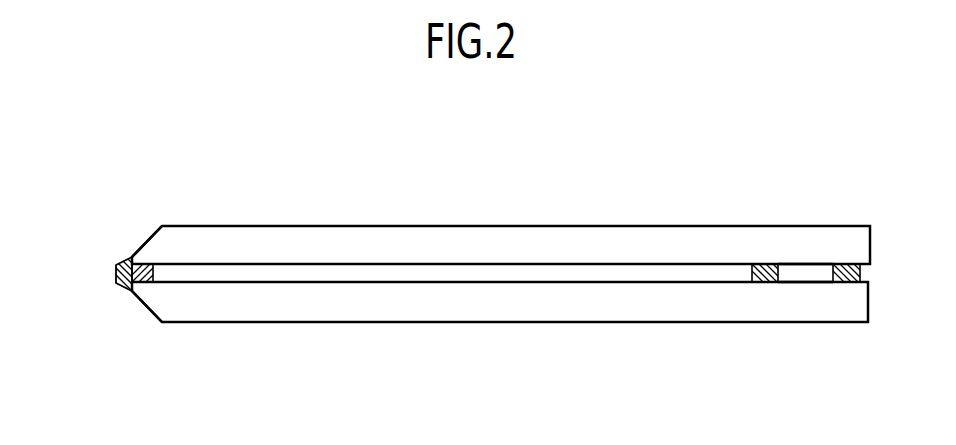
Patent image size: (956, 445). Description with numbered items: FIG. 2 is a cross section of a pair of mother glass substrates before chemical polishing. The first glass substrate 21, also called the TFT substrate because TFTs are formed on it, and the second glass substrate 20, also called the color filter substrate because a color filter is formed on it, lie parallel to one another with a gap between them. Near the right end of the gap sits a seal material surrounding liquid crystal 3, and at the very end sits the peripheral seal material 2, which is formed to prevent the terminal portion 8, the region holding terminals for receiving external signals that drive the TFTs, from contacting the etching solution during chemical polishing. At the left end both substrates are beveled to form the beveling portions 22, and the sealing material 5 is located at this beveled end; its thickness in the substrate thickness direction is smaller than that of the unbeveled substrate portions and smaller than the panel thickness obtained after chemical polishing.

The second glass substrate 20 is at (402, 234).
The first glass substrate 21 is at (404, 310).
The beveling portions 22 is at (143, 241).
The sealing material 5 is at (115, 273).
The terminal portion 8 is at (812, 272).
The seal material surrounding liquid crystal 3 is at (768, 283).
The peripheral seal material 2 is at (845, 283).